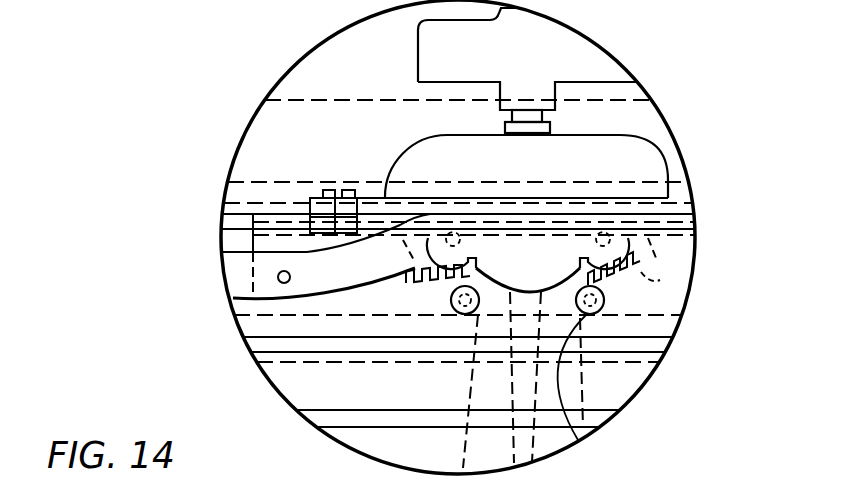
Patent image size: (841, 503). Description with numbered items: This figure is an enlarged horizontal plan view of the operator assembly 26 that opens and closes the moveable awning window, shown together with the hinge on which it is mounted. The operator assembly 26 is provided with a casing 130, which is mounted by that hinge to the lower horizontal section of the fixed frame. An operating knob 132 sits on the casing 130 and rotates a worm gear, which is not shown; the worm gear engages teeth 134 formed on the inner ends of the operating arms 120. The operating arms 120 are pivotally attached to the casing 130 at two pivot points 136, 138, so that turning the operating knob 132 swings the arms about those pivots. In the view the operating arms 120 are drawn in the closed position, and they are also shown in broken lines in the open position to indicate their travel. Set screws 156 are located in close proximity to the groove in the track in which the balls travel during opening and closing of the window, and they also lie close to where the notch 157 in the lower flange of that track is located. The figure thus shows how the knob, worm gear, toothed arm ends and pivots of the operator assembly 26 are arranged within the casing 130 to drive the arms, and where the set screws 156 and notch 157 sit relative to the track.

The operator assembly 26 is at (373, 94).
The operating arms 120 is at (300, 285).
The casing 130 is at (600, 143).
The operating knob 132 is at (445, 46).
The teeth 134 is at (440, 276).
The pivot attachment 136 is at (447, 227).
The pivot attachment 138 is at (606, 243).
The set screws 156 is at (458, 306).
The notch 157 is at (578, 440).